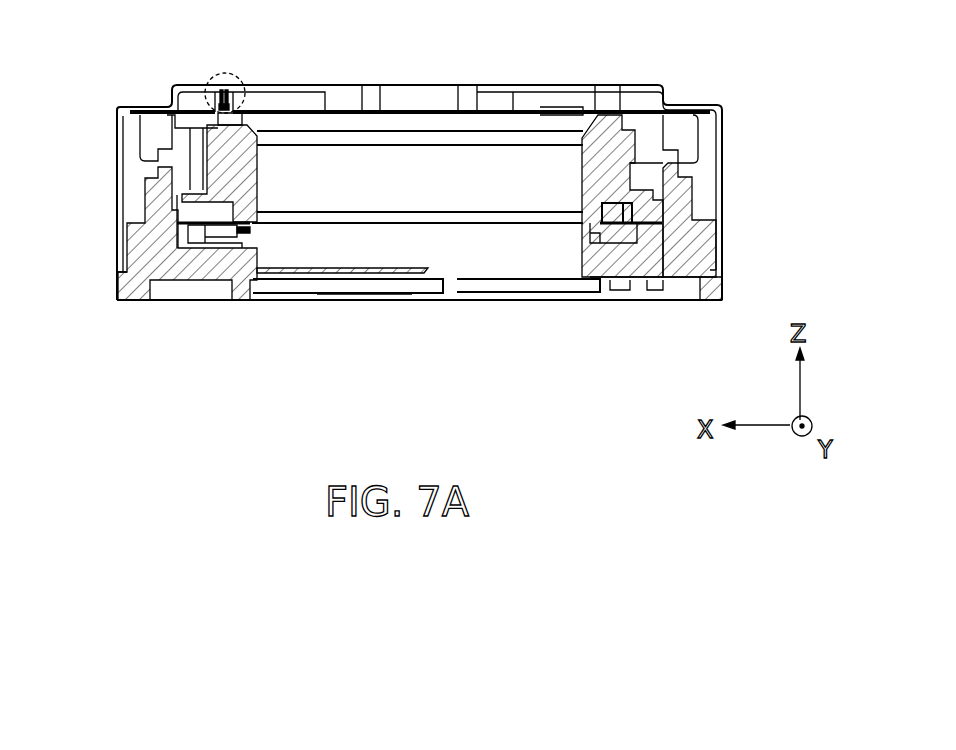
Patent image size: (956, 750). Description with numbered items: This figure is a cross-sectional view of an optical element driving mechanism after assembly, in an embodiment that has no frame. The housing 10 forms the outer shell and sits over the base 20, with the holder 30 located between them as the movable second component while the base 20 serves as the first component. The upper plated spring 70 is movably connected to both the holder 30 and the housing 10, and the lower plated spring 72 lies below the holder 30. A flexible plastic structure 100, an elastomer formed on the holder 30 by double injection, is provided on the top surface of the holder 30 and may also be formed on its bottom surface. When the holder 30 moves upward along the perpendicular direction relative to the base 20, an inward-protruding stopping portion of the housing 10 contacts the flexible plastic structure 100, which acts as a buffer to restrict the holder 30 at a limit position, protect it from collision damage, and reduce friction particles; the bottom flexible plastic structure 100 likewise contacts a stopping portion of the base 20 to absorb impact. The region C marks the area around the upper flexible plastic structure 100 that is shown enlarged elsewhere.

The housing 10 is at (116, 106).
The upper plated spring 70 is at (152, 107).
The flexible plastic structure 100 is at (226, 88).
The region C is at (238, 76).
The holder 30 is at (598, 138).
The base 20 is at (120, 292).
The lower plated spring 72 is at (187, 215).